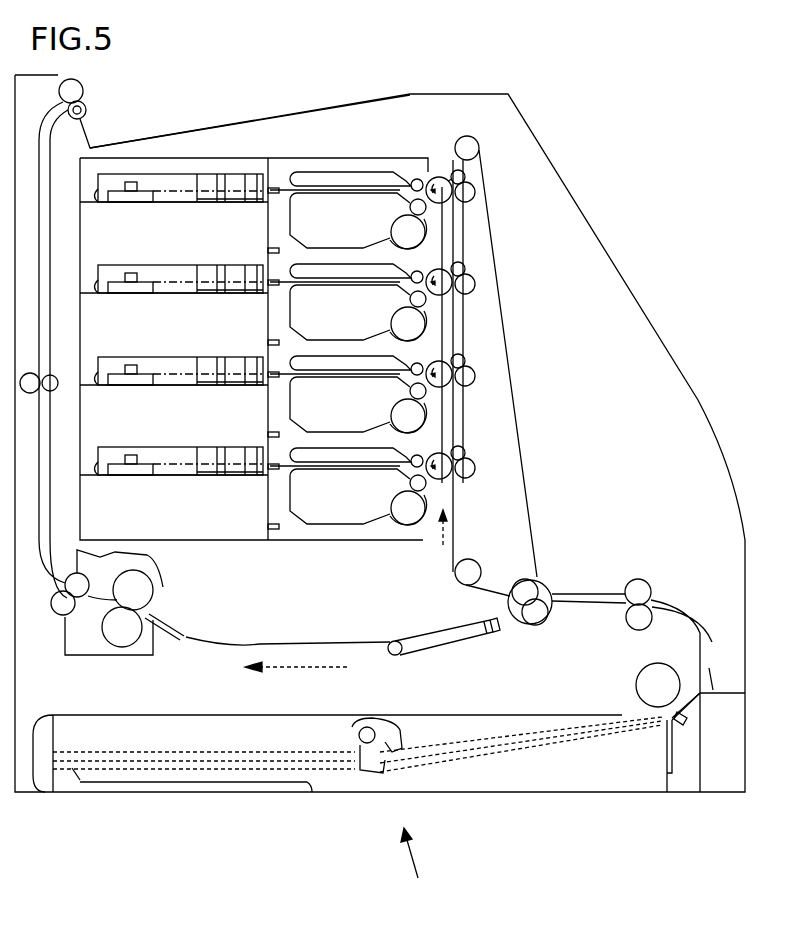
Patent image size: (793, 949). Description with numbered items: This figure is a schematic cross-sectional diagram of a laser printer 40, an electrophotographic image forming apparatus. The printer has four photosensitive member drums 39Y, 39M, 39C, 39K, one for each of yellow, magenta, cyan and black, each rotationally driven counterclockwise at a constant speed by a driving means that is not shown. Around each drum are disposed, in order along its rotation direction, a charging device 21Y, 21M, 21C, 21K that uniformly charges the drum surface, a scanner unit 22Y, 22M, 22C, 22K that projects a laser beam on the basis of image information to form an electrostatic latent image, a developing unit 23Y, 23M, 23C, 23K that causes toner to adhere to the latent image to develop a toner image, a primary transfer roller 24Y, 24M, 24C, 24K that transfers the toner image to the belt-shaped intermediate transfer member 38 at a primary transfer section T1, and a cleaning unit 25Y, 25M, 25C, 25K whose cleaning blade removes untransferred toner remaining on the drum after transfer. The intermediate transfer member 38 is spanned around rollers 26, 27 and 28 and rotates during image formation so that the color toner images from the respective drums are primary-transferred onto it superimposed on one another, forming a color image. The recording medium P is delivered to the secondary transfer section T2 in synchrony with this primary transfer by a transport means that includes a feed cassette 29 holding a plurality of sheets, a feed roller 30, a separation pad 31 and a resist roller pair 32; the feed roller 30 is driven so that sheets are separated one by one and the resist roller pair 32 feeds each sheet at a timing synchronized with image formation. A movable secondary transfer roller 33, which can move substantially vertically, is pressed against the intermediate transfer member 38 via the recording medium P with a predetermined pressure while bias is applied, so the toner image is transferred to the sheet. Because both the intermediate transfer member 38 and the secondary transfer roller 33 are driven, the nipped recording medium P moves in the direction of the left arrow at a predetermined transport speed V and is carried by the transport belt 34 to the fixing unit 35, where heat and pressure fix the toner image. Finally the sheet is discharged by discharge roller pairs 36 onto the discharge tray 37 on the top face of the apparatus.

The charging device 21K is at (430, 183).
The charging device 21C is at (452, 278).
The charging device 21M is at (452, 370).
The charging device 21Y is at (452, 462).
The scanner unit 22K is at (97, 204).
The scanner unit 22C is at (97, 295).
The scanner unit 22M is at (97, 387).
The scanner unit 22Y is at (97, 477).
The developing unit 23K is at (292, 212).
The developing unit 23C is at (292, 304).
The developing unit 23M is at (292, 396).
The developing unit 23Y is at (292, 488).
The primary transfer roller 24K is at (476, 195).
The primary transfer roller 24C is at (476, 286).
The primary transfer roller 24M is at (476, 378).
The primary transfer roller 24Y is at (476, 470).
The cleaning unit 25K is at (300, 172).
The cleaning unit 25C is at (292, 264).
The cleaning unit 25M is at (292, 356).
The cleaning unit 25Y is at (292, 448).
The roller 26 is at (472, 139).
The roller 27 is at (518, 580).
The roller 28 is at (455, 574).
The feed cassette 29 is at (542, 794).
The feed roller 30 is at (637, 676).
The separation pad 31 is at (690, 723).
The resist roller pair 32 is at (637, 578).
The secondary transfer roller 33 is at (537, 626).
The transport belt 34 is at (412, 634).
The fixing unit 35 is at (105, 655).
The discharge roller pairs 36 is at (84, 96).
The discharge tray 37 is at (280, 118).
The intermediate transfer member 38 is at (456, 519).
The photosensitive member drum 39K is at (466, 176).
The photosensitive member drum 39C is at (466, 269).
The photosensitive member drum 39M is at (466, 361).
The photosensitive member drum 39Y is at (466, 455).
The laser printer 40 is at (405, 870).
The primary transfer section T1 is at (441, 177).
The secondary transfer section T2 is at (545, 586).
The transport speed V is at (296, 677).
The recording medium P is at (328, 770).